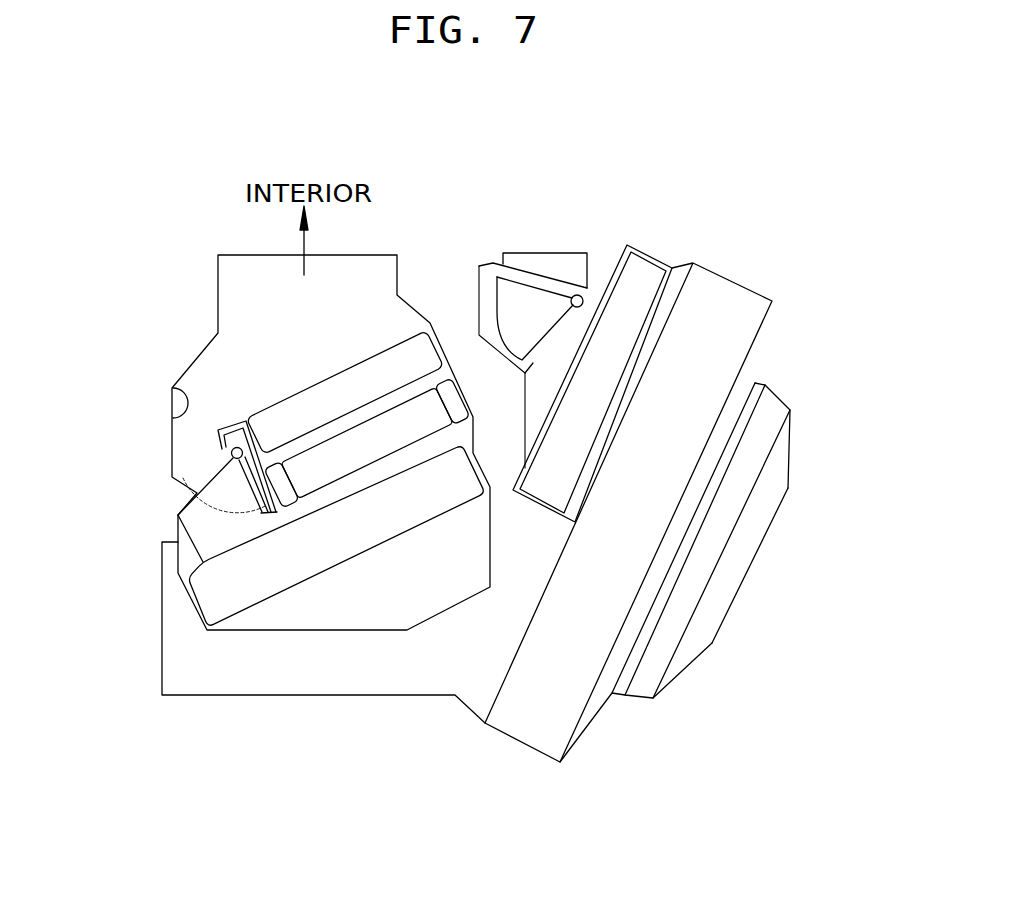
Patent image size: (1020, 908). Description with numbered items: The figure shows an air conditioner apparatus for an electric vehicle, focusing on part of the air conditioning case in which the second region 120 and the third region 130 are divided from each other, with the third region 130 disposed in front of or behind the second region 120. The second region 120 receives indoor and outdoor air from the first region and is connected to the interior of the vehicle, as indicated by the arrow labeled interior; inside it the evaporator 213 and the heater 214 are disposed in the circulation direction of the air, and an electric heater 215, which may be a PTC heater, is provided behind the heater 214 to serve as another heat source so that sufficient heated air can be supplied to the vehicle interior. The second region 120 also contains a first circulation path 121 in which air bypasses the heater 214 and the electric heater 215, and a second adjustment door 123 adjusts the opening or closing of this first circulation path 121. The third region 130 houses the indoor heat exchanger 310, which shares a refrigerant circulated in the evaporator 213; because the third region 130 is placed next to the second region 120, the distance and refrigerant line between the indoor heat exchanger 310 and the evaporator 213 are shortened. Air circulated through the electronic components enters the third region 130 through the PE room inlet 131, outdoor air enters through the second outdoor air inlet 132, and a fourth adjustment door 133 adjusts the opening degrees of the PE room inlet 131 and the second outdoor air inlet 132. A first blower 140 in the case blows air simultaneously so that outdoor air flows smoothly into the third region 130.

The second region 120 is at (173, 388).
The first circulation path 121 is at (213, 470).
The second adjustment door 123 is at (220, 493).
The third region 130 is at (386, 696).
The PE room inlet 131 is at (570, 252).
The second outdoor air inlet 132 is at (483, 297).
The fourth adjustment door 133 is at (528, 303).
The first blower 140 is at (698, 578).
The evaporator 213 is at (258, 585).
The heater 214 is at (343, 443).
The electric heater 215 is at (275, 410).
The indoor heat exchanger 310 is at (647, 275).